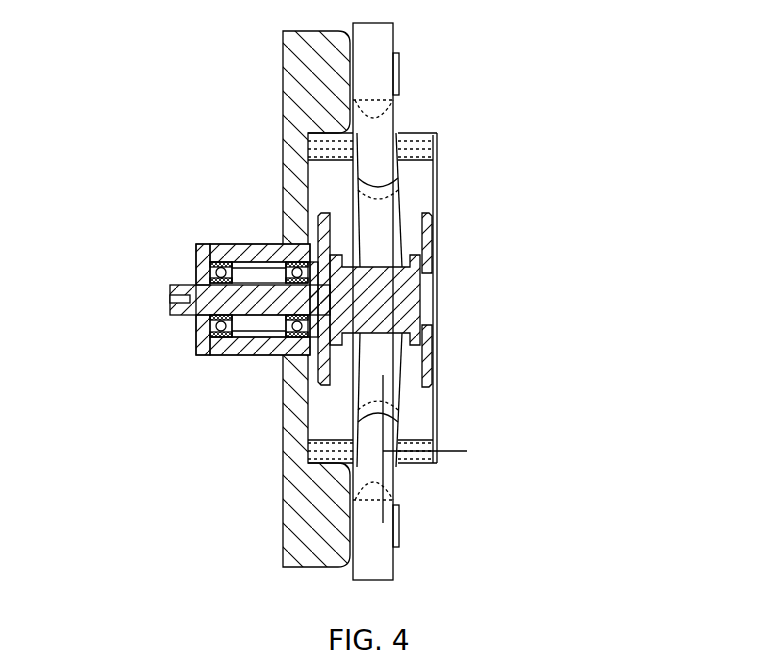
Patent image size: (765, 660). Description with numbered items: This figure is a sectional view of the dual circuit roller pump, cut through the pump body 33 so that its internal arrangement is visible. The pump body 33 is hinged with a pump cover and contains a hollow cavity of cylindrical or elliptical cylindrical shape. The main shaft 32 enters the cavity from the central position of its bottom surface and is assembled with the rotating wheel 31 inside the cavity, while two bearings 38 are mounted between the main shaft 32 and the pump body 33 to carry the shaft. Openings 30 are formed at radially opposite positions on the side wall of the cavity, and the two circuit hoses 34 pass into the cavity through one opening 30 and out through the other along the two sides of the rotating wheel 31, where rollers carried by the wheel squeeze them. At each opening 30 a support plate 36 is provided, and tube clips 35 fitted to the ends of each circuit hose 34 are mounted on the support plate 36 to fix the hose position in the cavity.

The opening 30 is at (417, 460).
The rotating wheel 31 is at (427, 372).
The main shaft 32 is at (412, 302).
The pump body 33 is at (292, 190).
The circuit hose 34 is at (372, 148).
The tube clip 35 is at (397, 77).
The support plate 36 is at (653, 80).
The bearing 38 is at (203, 332).